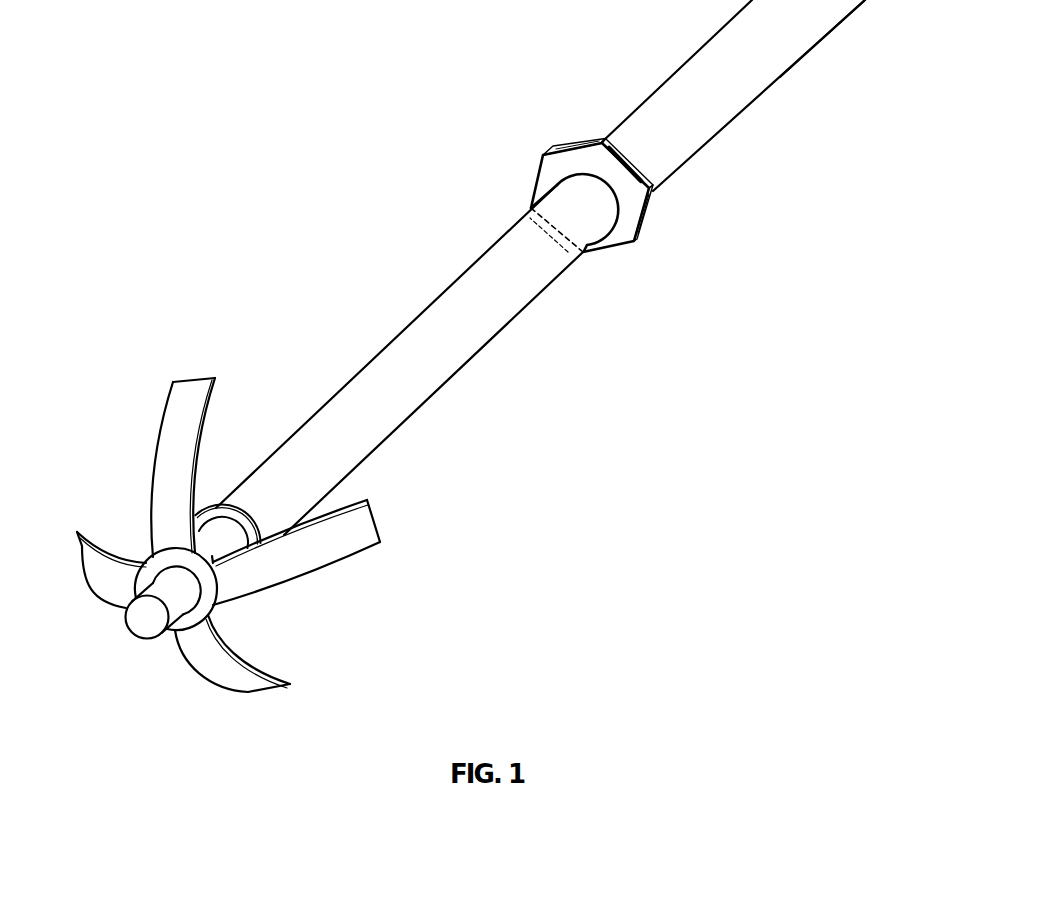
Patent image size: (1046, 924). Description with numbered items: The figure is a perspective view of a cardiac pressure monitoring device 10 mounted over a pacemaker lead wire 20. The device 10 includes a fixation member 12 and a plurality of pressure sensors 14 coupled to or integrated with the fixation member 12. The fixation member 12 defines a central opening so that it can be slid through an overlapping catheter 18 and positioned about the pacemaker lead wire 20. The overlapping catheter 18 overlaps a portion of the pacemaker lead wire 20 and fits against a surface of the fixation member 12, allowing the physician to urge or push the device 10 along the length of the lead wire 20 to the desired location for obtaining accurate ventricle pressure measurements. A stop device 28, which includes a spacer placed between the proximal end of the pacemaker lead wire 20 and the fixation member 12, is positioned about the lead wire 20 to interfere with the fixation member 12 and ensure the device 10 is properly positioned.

The cardiac pressure monitoring device 10 is at (534, 130).
The fixation member 12 is at (623, 238).
The pressure sensors 14 is at (578, 142).
The overlapping catheter 18 is at (817, 32).
The pacemaker lead wire 20 is at (415, 402).
The stop device 28 is at (224, 513).